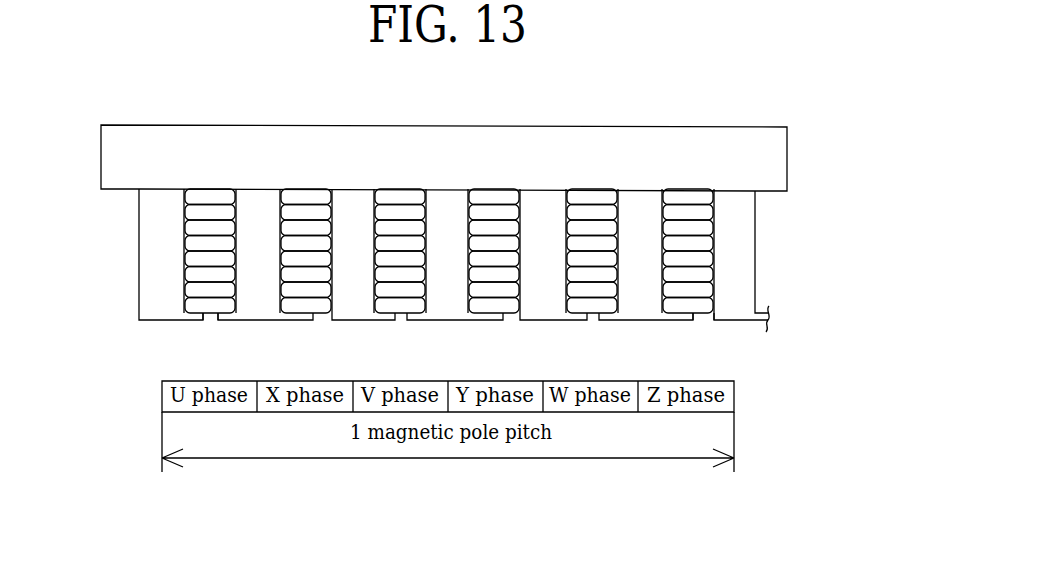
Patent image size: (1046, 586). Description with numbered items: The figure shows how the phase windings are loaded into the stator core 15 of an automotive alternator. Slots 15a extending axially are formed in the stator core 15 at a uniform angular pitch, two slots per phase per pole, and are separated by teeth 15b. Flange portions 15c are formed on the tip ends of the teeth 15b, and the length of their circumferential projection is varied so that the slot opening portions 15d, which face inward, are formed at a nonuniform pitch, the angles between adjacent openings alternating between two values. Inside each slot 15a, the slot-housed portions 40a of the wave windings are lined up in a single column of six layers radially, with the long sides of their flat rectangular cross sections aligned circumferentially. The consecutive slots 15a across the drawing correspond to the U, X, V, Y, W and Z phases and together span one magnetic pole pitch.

The stator core 15 is at (759, 125).
The slot 15a is at (714, 248).
The tooth 15b is at (738, 283).
The flange portion 15c is at (662, 321).
The slot opening portion 15d is at (210, 318).
The slot-housed portion 40a is at (193, 247).